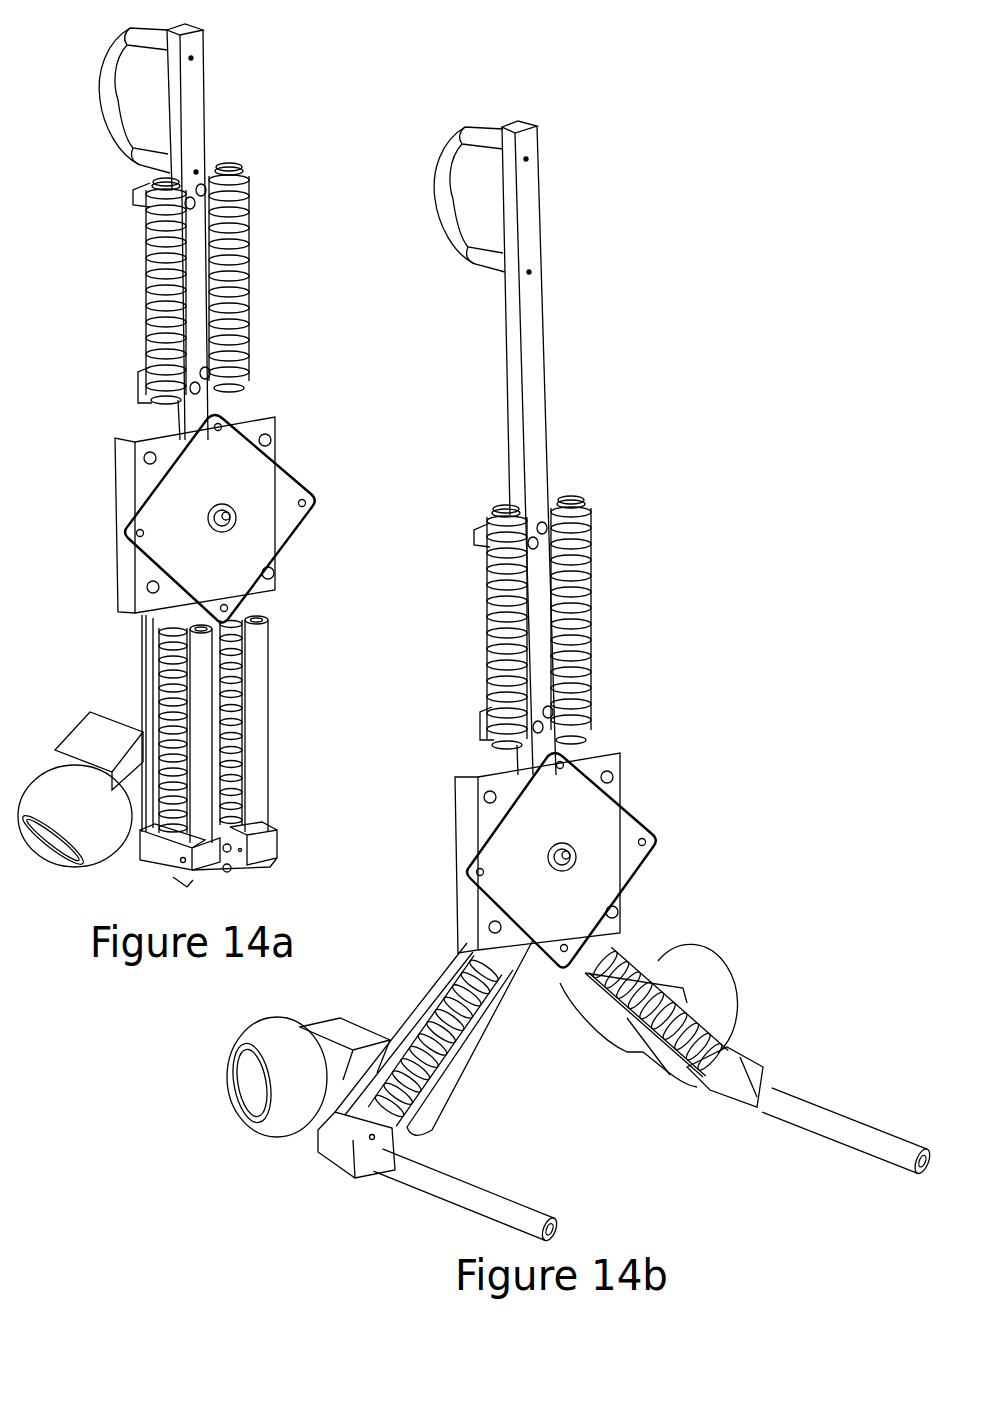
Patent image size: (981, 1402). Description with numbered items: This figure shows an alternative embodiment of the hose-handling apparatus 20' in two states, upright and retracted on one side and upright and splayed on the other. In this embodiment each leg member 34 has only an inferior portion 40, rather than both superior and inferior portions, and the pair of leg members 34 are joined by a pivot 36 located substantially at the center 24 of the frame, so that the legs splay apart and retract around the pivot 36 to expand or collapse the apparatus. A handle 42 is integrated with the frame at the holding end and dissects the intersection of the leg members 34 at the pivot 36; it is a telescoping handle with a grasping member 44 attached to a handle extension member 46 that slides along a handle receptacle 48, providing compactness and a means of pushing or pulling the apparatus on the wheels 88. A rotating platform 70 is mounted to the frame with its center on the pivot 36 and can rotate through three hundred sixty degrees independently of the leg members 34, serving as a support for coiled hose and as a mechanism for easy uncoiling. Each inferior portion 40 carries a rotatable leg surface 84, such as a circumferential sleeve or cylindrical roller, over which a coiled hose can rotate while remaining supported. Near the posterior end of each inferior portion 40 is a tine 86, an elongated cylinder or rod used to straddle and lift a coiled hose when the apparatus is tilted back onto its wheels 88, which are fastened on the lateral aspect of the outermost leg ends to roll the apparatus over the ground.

In FIG. 14A, the apparatus 20' is at (228, 493).
In FIG. 14B, the apparatus 20' is at (519, 690).
In FIG. 14A, the handle 42 is at (269, 232).
In FIG. 14B, the handle 42 is at (606, 448).
In FIG. 14A, the grasping member 44 is at (107, 80).
In FIG. 14B, the grasping member 44 is at (442, 197).
In FIG. 14A, the handle extension member 46 is at (195, 128).
In FIG. 14B, the handle extension member 46 is at (532, 318).
In FIG. 14A, the handle receptacle 48 is at (200, 347).
In FIG. 14B, the handle receptacle 48 is at (540, 653).
In FIG. 14A, the rotatable leg surface 84 is at (170, 295).
In FIG. 14B, the rotatable leg surface 84 is at (590, 577).
In FIG. 14A, the rotating platform 70 is at (267, 480).
In FIG. 14B, the rotating platform 70 is at (617, 832).
In FIG. 14A, the center 24 is at (316, 533).
In FIG. 14B, the center 24 is at (655, 869).
In FIG. 14A, the pivot 36 is at (233, 532).
In FIG. 14B, the pivot 36 is at (573, 867).
In FIG. 14A, the tine 86 is at (200, 755).
In FIG. 14B, the tine 86 is at (427, 1177).
In FIG. 14A, the wheel 88 is at (90, 843).
In FIG. 14B, the wheel 88 is at (292, 1112).
In FIG. 14B, the leg member 34 is at (540, 1059).
In FIG. 14B, the inferior portion 40 is at (447, 1003).